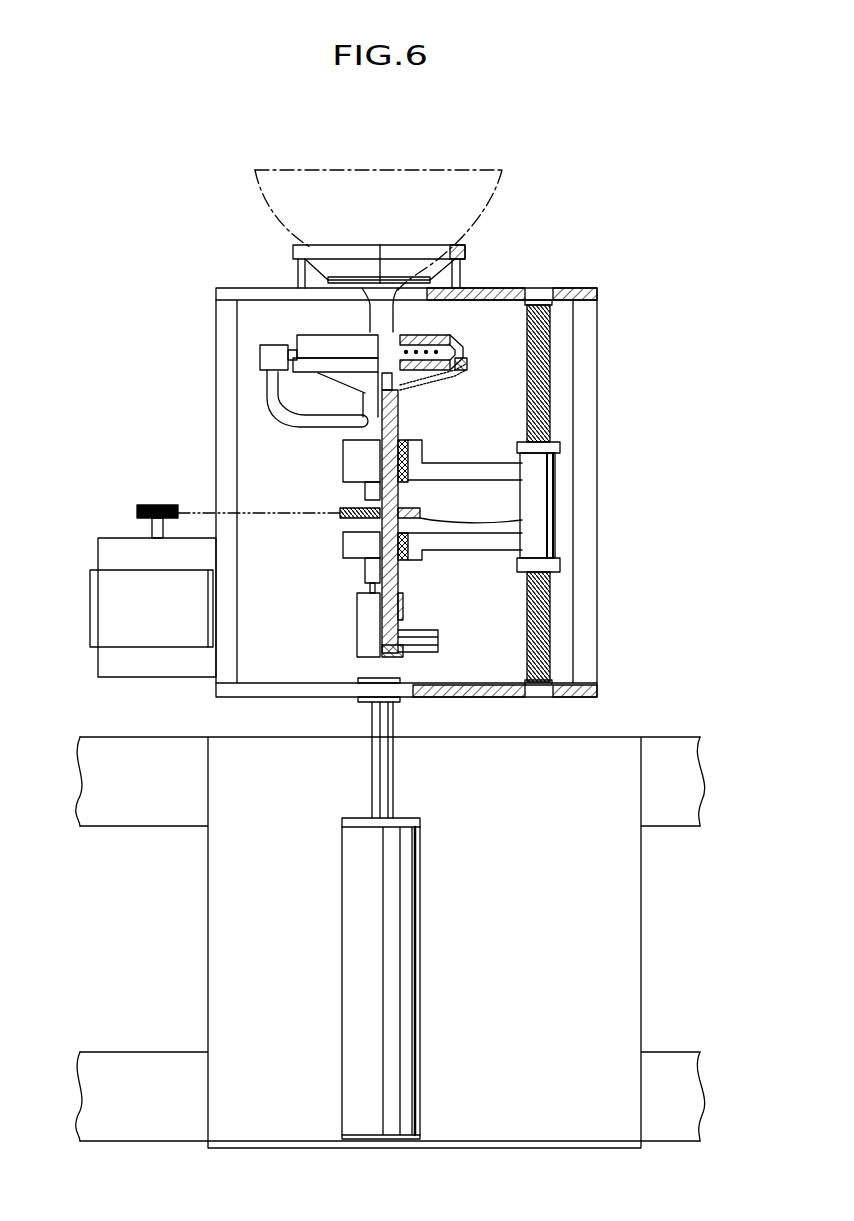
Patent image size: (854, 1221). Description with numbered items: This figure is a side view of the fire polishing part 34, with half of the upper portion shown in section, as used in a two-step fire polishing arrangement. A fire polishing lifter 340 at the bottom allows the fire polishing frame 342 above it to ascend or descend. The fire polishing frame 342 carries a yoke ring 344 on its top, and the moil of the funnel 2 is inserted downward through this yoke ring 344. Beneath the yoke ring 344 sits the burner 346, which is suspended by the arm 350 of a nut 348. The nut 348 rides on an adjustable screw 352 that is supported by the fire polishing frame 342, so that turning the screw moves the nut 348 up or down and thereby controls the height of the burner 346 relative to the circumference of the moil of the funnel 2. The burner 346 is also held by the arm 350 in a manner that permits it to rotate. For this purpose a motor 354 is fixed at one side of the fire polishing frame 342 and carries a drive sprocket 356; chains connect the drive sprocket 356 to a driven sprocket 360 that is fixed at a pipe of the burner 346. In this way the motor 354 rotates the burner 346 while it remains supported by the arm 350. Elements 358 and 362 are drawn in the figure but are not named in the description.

The funnel 2 is at (470, 222).
The fire polishing part 34 is at (683, 683).
The fire polishing lifter 340 is at (352, 930).
The fire polishing frame 342 is at (585, 410).
The yoke ring 344 is at (320, 250).
The burner 346 is at (325, 348).
The nut 348 is at (540, 480).
The arm 350 is at (500, 540).
The adjustable screw 352 is at (545, 345).
The motor 354 is at (100, 605).
The drive sprocket 356 is at (137, 512).
The spindle shaft 358 is at (370, 498).
The driven sprocket 360 is at (522, 518).
The threaded coupling 362 is at (255, 512).